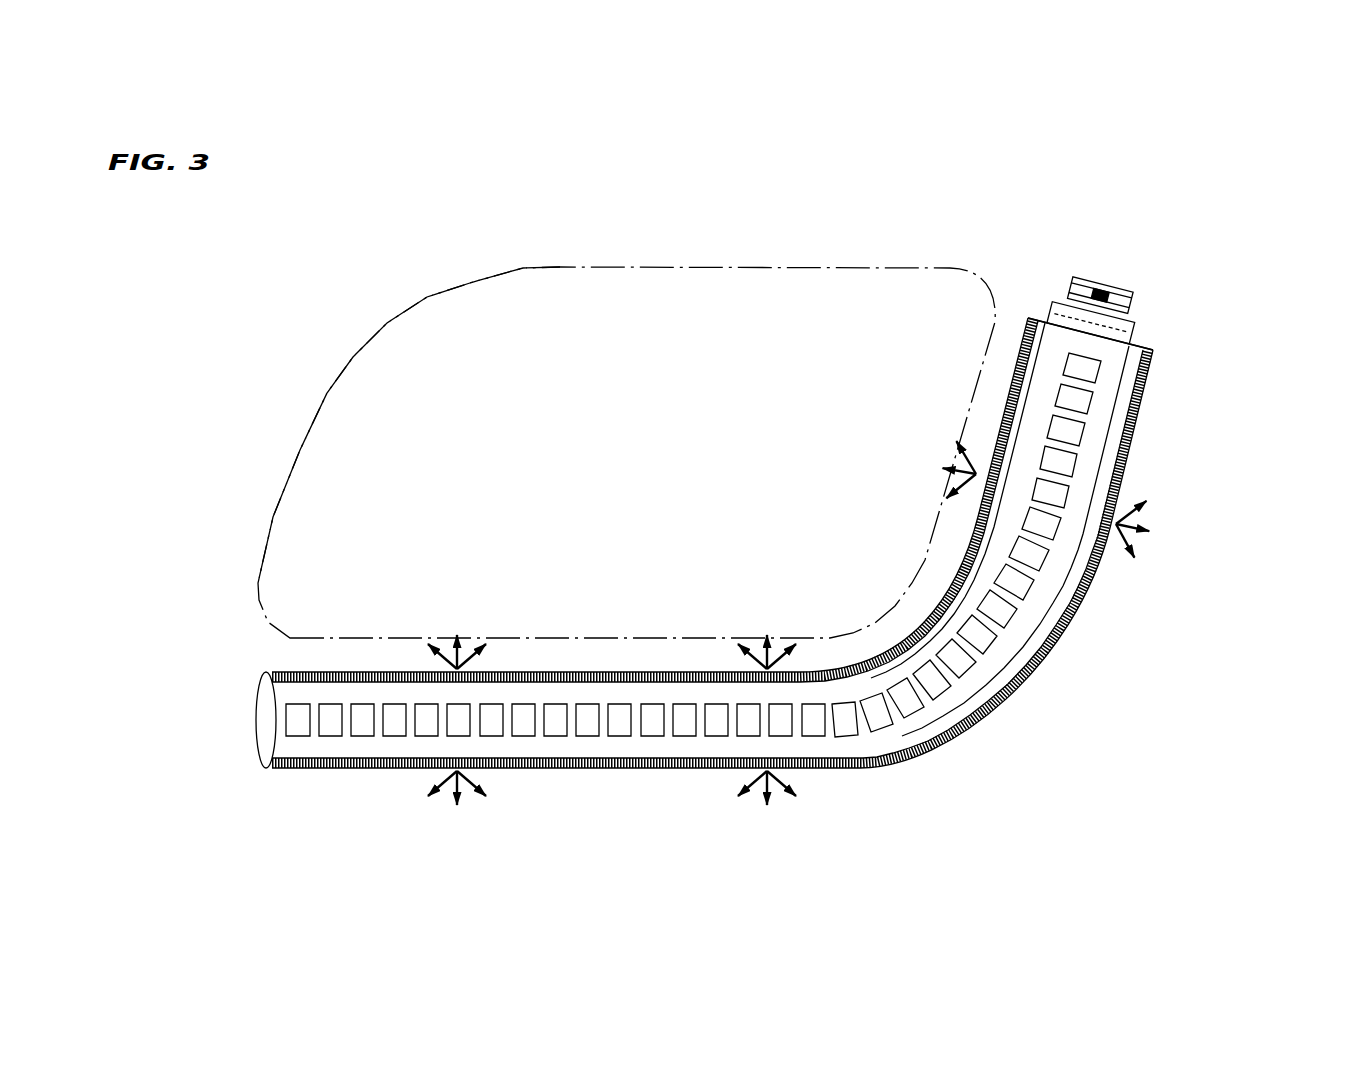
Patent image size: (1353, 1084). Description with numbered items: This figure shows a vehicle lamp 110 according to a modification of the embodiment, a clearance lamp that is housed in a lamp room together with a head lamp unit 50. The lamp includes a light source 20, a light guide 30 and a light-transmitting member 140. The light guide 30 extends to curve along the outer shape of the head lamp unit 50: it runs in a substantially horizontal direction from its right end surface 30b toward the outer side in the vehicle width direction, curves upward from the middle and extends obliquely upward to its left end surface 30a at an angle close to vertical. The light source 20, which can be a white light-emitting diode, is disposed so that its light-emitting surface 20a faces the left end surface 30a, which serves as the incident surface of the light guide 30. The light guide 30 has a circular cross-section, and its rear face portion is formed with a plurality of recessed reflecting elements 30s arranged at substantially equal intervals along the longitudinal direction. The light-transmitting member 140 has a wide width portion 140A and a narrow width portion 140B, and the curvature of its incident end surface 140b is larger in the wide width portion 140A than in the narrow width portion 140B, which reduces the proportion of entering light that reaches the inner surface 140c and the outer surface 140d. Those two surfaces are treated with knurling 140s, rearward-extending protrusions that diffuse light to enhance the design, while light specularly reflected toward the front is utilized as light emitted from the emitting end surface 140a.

The vehicle lamp 110 is at (797, 350).
The head lamp unit 50 is at (402, 310).
The light source 20 is at (1122, 284).
The light-emitting surface 20a is at (1092, 300).
The light guide 30 is at (1148, 340).
The left end surface 30a is at (1124, 323).
The right end surface 30b is at (259, 722).
The reflecting elements 30s is at (850, 735).
The light-transmitting member 140 is at (1077, 632).
The wide width portion 140A is at (1088, 458).
The narrow width portion 140B is at (412, 742).
The emitting end surface 140a is at (668, 703).
The incident end surface 140b is at (665, 768).
The inner surface 140c is at (922, 632).
The outer surface 140d is at (988, 716).
The knurling 140s is at (555, 672).